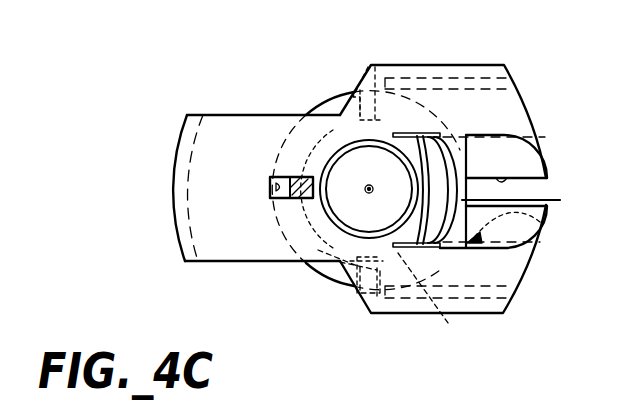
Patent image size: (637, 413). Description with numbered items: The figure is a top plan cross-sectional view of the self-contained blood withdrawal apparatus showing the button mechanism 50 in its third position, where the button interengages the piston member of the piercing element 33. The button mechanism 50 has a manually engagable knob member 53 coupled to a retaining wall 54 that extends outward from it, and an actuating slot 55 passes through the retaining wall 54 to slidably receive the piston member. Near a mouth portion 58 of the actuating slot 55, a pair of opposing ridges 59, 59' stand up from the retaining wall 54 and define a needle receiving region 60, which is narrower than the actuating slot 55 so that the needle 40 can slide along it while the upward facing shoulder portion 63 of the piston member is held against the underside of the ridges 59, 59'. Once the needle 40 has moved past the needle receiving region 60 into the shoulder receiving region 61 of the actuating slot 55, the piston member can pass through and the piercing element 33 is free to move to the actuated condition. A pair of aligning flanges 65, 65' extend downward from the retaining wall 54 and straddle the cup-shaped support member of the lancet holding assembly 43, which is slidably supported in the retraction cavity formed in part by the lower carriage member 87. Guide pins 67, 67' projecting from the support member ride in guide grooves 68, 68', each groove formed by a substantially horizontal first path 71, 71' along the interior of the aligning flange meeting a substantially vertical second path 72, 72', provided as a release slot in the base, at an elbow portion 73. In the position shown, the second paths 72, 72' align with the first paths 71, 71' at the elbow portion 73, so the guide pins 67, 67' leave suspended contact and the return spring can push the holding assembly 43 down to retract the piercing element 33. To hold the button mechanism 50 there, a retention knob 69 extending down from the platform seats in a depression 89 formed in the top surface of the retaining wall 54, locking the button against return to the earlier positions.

The button mechanism 50 is at (167, 117).
The knob member 53 is at (177, 150).
The retaining wall 54 is at (232, 115).
The needle 40 is at (369, 189).
The depression 89 is at (270, 179).
The retention knob 69 is at (270, 198).
The shoulder portion 63 is at (338, 195).
The shoulder receiving region 61 is at (325, 215).
The lancet holding assembly 43 is at (315, 245).
The aligning flange 65 is at (443, 94).
The aligning flange 65' is at (443, 280).
The guide groove 68 is at (465, 53).
The guide groove 68' is at (490, 287).
The guide pin 67 is at (341, 73).
The guide pin 67' is at (313, 320).
The second path (release slot) 72 is at (332, 86).
The second path (release slot) 72' is at (457, 299).
The elbow portion 73 is at (370, 65).
The first path 71 is at (501, 91).
The first path 71' is at (508, 285).
The piercing element 33 is at (425, 172).
The actuating slot 55 is at (540, 222).
The ridge 59 is at (526, 142).
The ridge 59' is at (516, 239).
The needle receiving region 60 is at (515, 178).
The mouth portion 58 is at (510, 188).
The lower carriage member 87 is at (546, 203).